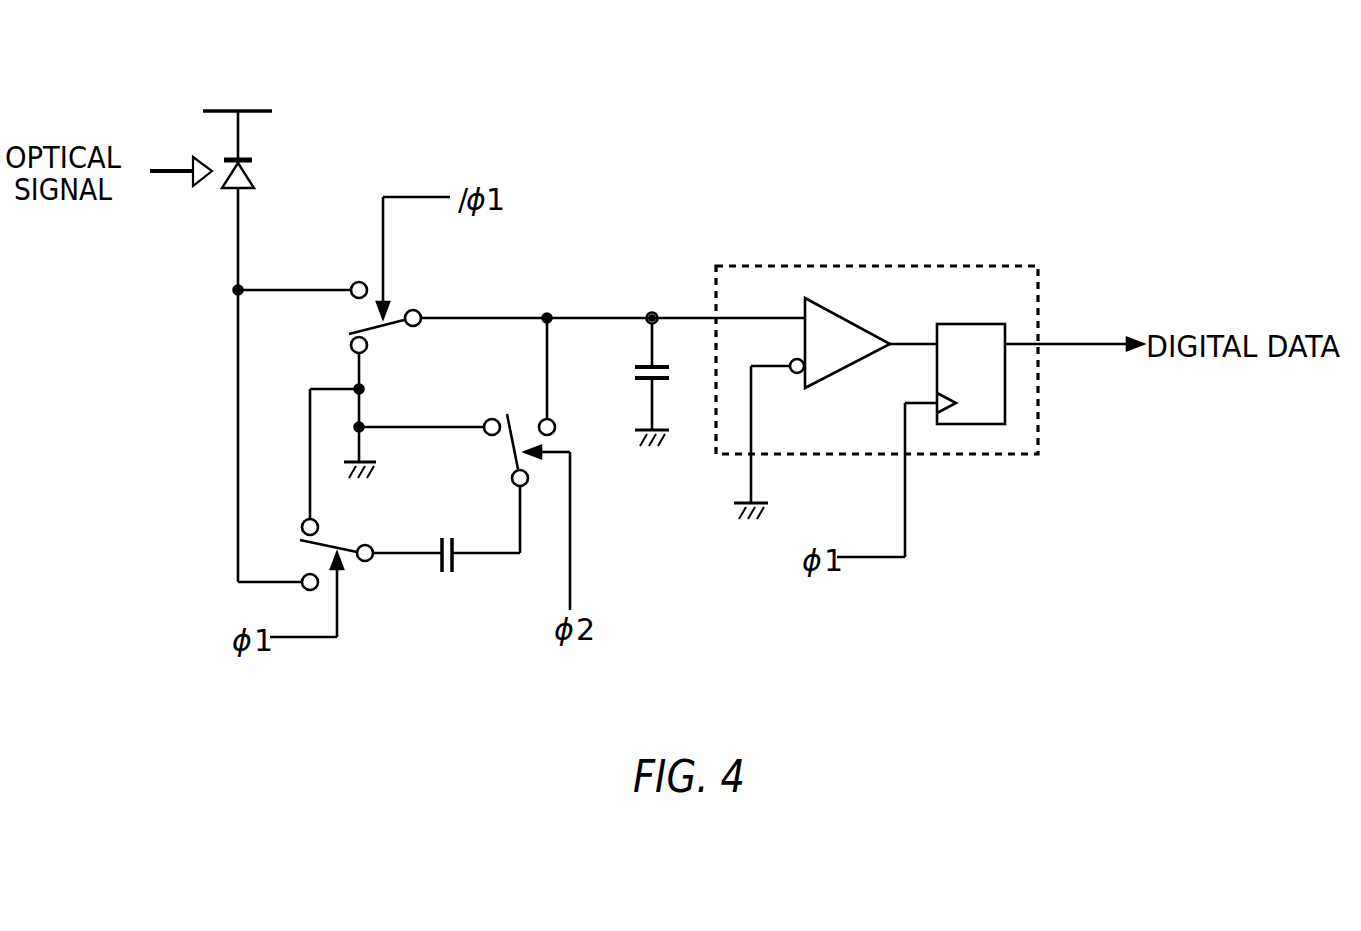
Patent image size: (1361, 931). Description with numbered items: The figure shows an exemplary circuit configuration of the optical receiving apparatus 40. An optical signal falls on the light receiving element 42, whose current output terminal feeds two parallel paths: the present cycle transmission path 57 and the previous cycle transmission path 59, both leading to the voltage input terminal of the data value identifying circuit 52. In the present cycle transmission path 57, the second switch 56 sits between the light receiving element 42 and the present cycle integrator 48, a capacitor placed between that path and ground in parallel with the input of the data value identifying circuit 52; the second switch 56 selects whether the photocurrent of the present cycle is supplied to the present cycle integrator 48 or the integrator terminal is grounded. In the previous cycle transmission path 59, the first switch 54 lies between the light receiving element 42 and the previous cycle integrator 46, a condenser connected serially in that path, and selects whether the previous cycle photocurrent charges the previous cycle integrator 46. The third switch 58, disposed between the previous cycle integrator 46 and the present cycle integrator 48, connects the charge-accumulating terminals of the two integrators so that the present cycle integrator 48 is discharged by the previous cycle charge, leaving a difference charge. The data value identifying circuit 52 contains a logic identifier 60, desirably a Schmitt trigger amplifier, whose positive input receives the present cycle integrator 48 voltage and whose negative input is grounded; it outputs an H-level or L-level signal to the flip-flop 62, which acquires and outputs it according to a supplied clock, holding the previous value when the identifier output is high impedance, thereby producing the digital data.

The optical receiving apparatus 40 is at (1267, 62).
The light receiving element 42 is at (258, 178).
The previous cycle integrator 46 is at (452, 574).
The present cycle integrator 48 is at (635, 367).
The data value identifying circuit 52 is at (880, 266).
The first switch 54 is at (374, 546).
The second switch 56 is at (412, 310).
The present cycle transmission path 57 is at (510, 318).
The third switch 58 is at (512, 478).
The previous cycle transmission path 59 is at (238, 437).
The logic identifier 60 is at (846, 318).
The flip-flop 62 is at (1005, 400).